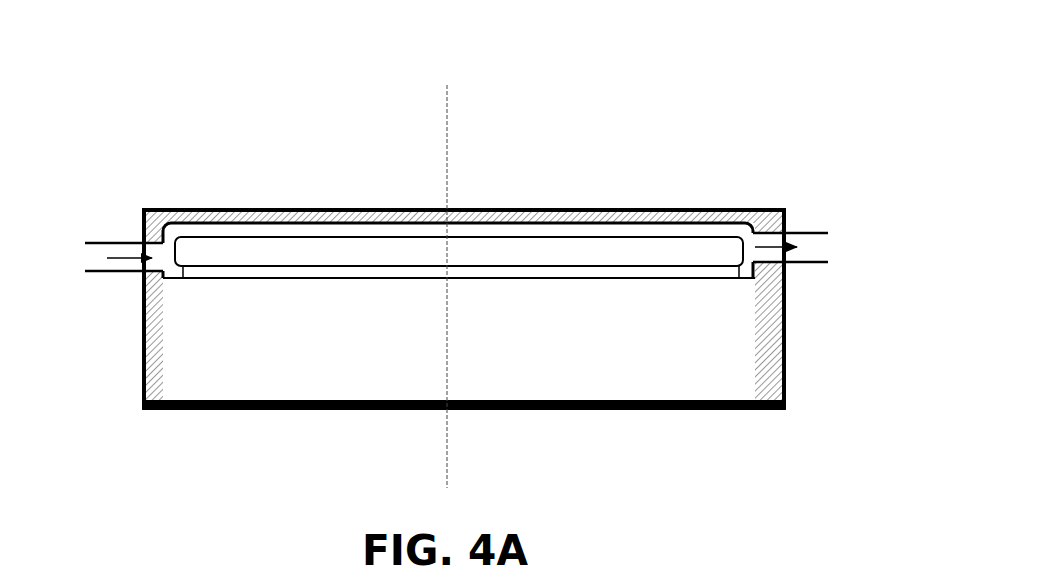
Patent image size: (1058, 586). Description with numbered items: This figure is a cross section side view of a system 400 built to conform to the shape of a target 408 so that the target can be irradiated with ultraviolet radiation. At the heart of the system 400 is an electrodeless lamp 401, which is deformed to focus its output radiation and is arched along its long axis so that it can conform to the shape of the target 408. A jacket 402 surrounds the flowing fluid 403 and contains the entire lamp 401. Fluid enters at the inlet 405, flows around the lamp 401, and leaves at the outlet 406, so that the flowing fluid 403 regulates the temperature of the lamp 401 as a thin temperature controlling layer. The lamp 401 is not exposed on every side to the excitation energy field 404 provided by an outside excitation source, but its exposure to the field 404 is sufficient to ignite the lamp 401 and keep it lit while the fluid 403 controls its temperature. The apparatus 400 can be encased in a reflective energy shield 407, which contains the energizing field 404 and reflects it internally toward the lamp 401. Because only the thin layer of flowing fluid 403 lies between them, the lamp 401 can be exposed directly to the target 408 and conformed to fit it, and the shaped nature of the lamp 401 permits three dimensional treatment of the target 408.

The system 400 is at (818, 112).
The electrodeless lamp 401 is at (368, 250).
The jacket 402 is at (412, 278).
The flowing fluid 403 is at (518, 270).
The excitation energy field 404 is at (610, 220).
The inlet 405 is at (117, 243).
The outlet 406 is at (812, 233).
The reflective energy shield 407 is at (786, 375).
The target 408 is at (417, 322).